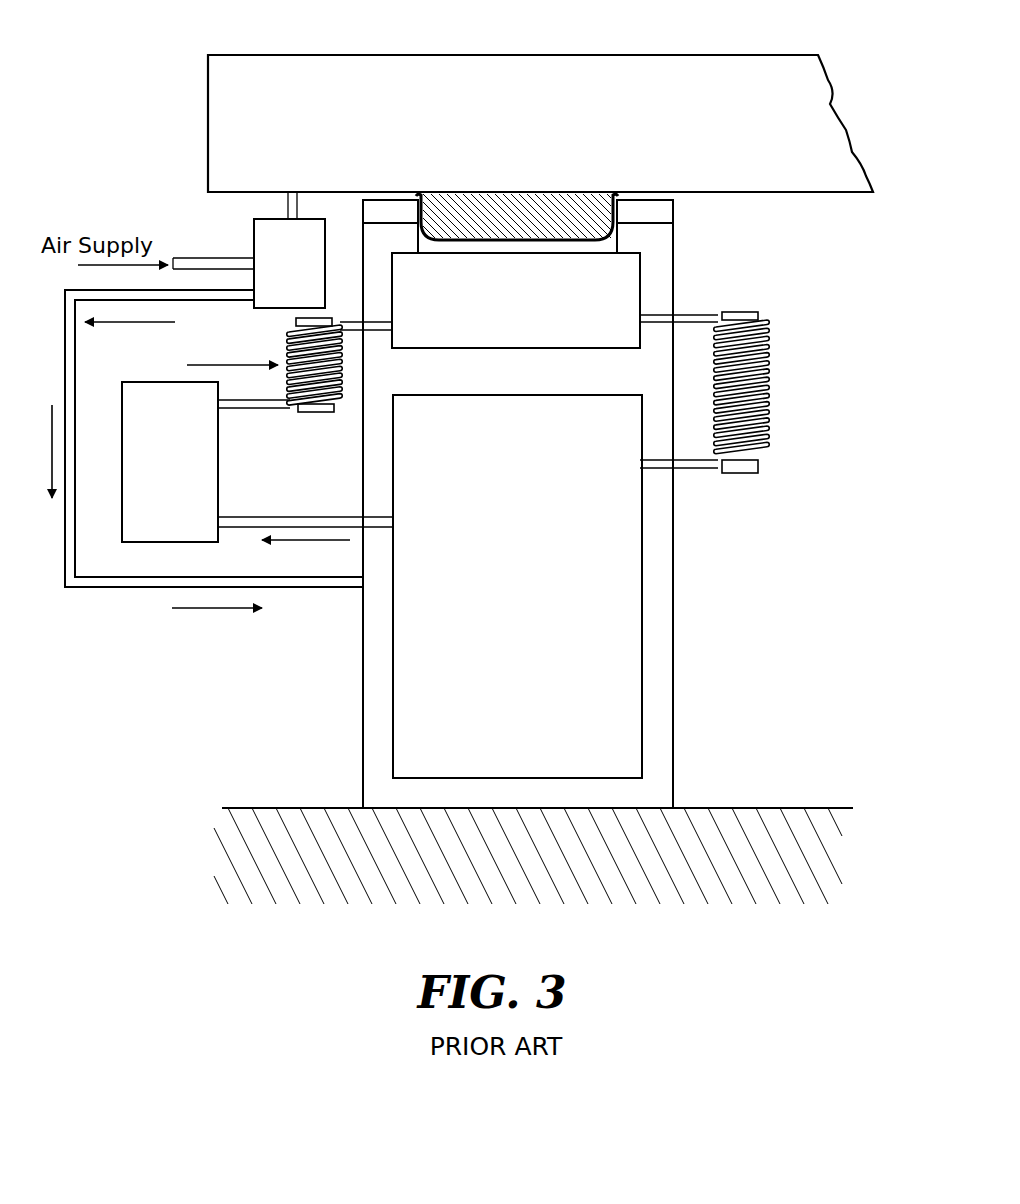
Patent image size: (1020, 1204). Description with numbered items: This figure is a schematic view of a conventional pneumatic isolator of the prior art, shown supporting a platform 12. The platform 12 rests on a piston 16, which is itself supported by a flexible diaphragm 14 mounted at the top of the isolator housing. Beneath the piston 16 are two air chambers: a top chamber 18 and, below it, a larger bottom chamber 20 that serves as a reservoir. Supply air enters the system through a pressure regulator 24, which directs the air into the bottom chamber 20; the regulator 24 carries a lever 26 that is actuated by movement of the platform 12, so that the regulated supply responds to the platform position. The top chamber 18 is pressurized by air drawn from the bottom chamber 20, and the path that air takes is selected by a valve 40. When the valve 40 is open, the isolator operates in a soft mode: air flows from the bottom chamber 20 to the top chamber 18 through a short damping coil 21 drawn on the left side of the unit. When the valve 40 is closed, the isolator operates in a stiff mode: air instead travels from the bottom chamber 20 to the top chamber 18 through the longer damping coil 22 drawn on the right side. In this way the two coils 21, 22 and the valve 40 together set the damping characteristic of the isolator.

The platform 12 is at (679, 75).
The flexible diaphragm 14 is at (653, 222).
The piston 16 is at (500, 226).
The top chamber 18 is at (501, 313).
The bottom chamber 20 is at (503, 558).
The short damping coil 21 is at (289, 334).
The longer damping coil 22 is at (692, 318).
The pressure regulator 24 is at (278, 276).
The lever 26 is at (287, 205).
The valve 40 is at (154, 478).